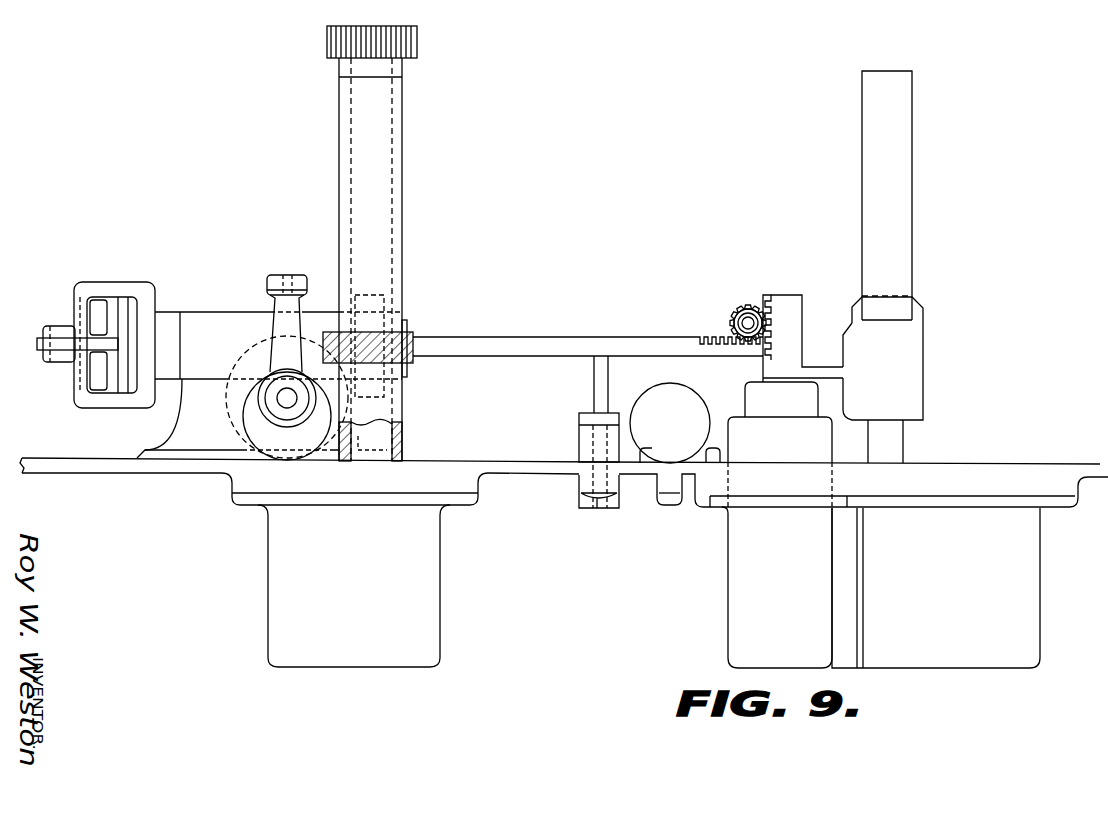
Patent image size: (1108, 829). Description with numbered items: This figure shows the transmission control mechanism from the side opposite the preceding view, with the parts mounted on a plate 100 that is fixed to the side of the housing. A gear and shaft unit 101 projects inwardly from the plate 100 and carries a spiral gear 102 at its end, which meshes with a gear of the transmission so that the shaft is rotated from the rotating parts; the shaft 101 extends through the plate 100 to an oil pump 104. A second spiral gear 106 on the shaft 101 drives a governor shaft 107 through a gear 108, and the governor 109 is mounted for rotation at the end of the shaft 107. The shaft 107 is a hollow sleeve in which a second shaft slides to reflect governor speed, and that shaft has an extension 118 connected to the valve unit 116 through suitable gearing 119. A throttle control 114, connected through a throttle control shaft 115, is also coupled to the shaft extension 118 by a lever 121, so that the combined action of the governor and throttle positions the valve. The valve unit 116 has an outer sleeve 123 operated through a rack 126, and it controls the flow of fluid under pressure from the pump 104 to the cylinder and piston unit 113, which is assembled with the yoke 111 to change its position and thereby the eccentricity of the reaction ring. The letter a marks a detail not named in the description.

The plate 100 is at (92, 474).
The gear and shaft unit 101 is at (399, 170).
The spiral gear 102 is at (415, 33).
The oil pump 104 is at (436, 547).
The second spiral gear 106 is at (412, 330).
The governor shaft 107 is at (188, 317).
The gear 108 is at (386, 295).
The governor 109 is at (112, 290).
The yoke 111 is at (906, 212).
The cylinder and piston unit 113 is at (1034, 581).
The throttle control 114 is at (582, 500).
The throttle control shaft 115 is at (586, 443).
The valve unit 116 is at (729, 579).
The shaft extension 118 is at (498, 343).
The gearing 119 is at (737, 312).
The lever 121 is at (596, 388).
The outer sleeve 123 is at (763, 368).
The rack 126 is at (763, 295).
The port a is at (598, 511).